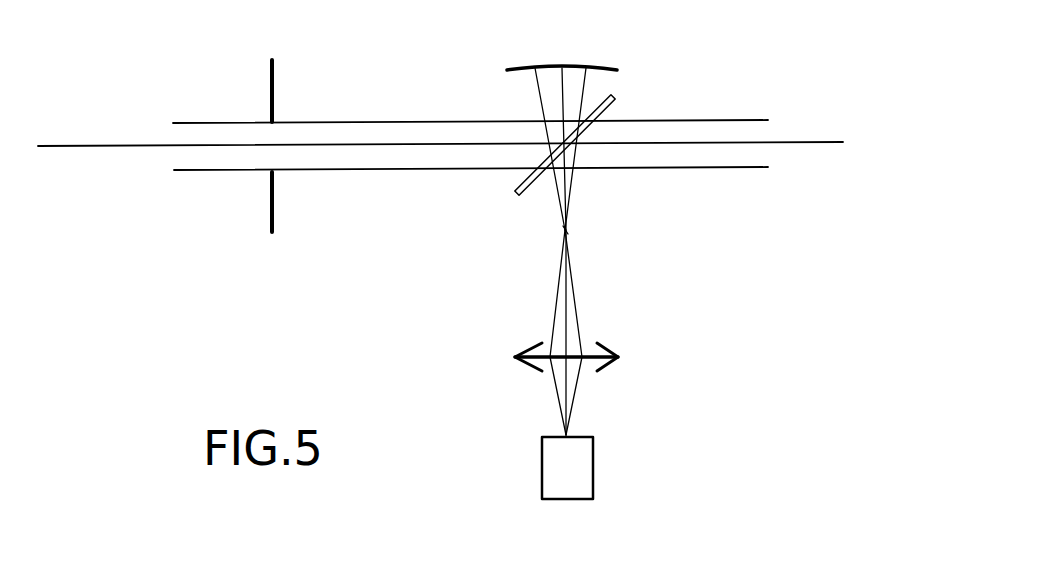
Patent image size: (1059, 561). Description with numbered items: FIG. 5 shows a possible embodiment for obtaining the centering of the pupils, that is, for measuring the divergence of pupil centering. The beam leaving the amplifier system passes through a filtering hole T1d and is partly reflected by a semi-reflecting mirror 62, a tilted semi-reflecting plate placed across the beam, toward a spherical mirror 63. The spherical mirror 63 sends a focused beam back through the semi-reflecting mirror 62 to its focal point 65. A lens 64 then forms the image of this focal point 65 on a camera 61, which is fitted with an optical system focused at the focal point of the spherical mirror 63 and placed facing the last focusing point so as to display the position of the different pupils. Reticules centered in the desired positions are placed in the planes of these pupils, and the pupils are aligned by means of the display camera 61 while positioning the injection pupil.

The filtering hole T1d is at (275, 120).
The camera 61 is at (593, 475).
The semi-reflecting mirror 62 is at (613, 97).
The spherical mirror 63 is at (515, 70).
The lens 64 is at (613, 350).
The focal point 65 is at (567, 230).